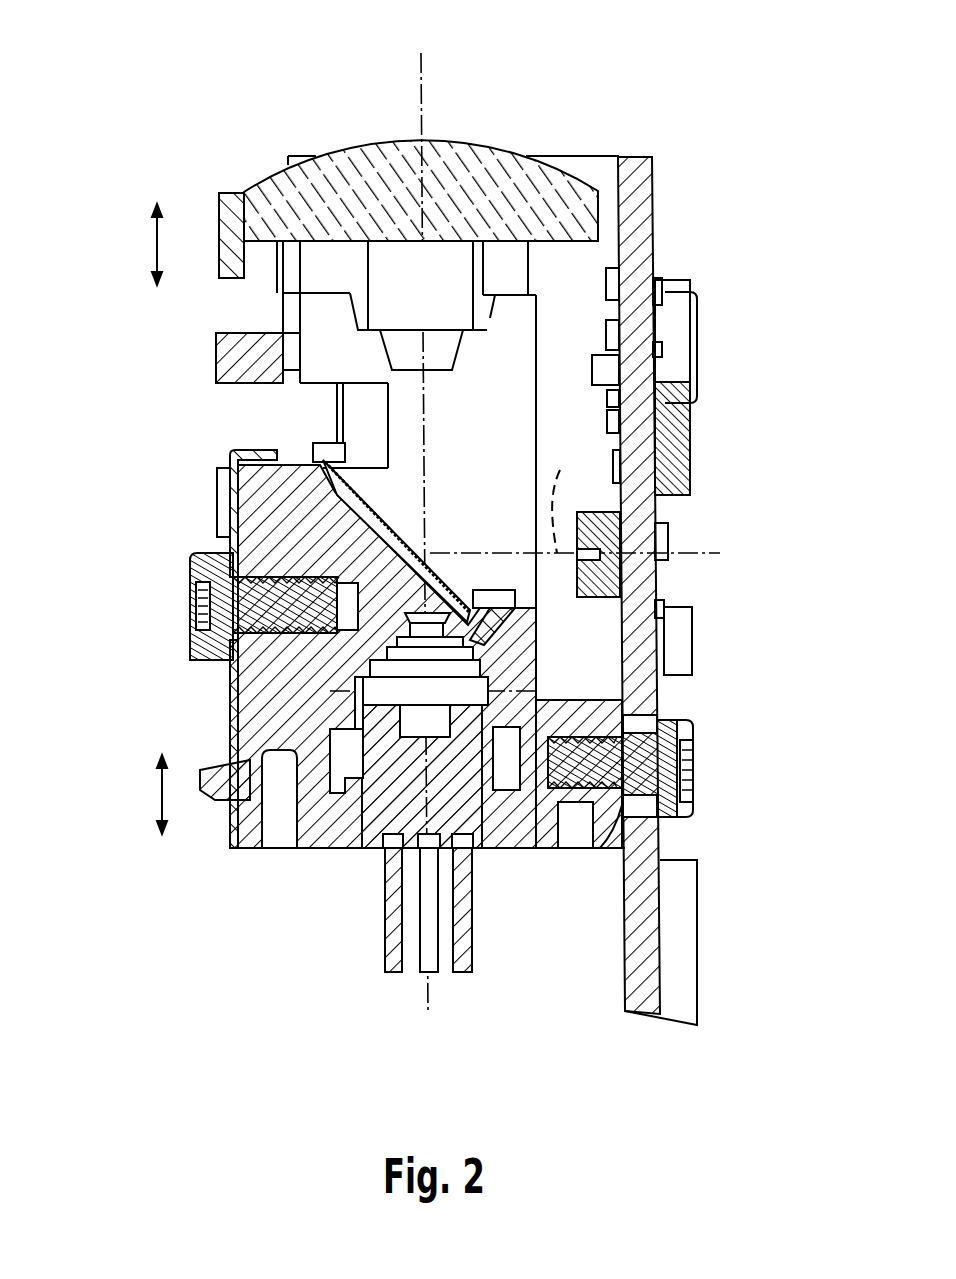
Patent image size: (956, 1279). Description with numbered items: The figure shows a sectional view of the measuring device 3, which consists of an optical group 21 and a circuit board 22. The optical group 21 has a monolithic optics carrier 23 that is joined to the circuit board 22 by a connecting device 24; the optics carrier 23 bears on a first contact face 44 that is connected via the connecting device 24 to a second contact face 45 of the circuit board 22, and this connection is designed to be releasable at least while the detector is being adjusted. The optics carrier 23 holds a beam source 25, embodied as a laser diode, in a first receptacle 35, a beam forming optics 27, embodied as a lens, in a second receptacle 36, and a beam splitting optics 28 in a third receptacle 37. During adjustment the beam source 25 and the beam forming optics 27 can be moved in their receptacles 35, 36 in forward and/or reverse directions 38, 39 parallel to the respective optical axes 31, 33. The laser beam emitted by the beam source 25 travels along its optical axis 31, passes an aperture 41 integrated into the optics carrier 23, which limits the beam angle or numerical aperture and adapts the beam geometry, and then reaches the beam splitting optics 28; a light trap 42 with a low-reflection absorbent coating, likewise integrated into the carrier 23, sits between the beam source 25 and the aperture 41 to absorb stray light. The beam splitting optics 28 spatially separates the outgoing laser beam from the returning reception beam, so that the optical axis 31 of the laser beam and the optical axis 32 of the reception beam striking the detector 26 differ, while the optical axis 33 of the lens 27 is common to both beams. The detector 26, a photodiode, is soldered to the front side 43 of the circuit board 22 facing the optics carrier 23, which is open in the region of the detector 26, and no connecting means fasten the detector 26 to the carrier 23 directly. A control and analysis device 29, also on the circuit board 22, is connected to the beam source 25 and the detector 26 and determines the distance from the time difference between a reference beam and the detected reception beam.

The measuring device 3 is at (214, 116).
The optical group 21 is at (388, 1000).
The circuit board 22 is at (651, 937).
The optics carrier 23 is at (272, 506).
The connecting device 24 is at (632, 766).
The beam source 25 is at (488, 835).
The detector 26 is at (598, 538).
The beam forming optics 27 is at (352, 188).
The beam splitting optics 28 is at (388, 518).
The control and analysis device 29 is at (668, 440).
The optical axis 31 is at (452, 690).
The optical axis 32 is at (571, 502).
The optical axis 33 is at (422, 105).
The first receptacle 35 is at (343, 833).
The second receptacle 36 is at (246, 262).
The third receptacle 37 is at (484, 600).
The forward and/or reverse direction 38 is at (161, 795).
The forward and/or reverse direction 39 is at (156, 243).
The aperture 41 is at (478, 632).
The light trap 42 is at (355, 688).
The front side 43 is at (620, 992).
The first contact face 44 is at (627, 836).
The second contact face 45 is at (606, 848).